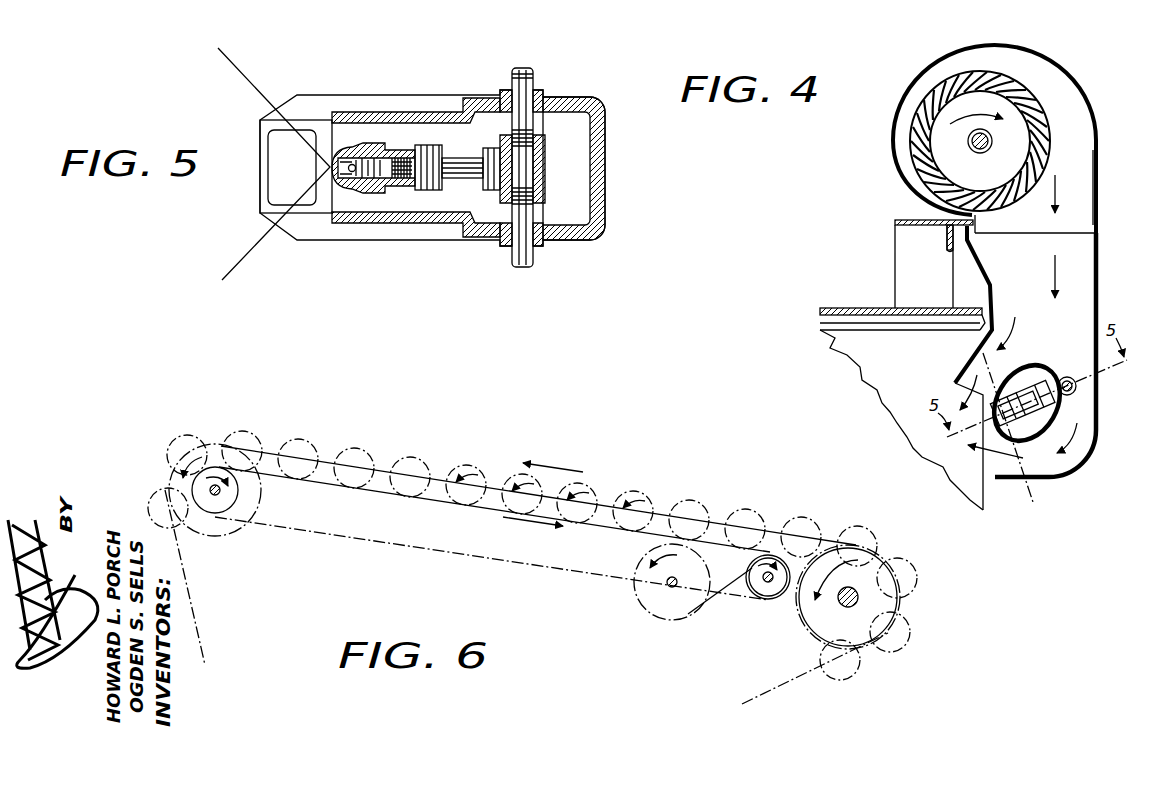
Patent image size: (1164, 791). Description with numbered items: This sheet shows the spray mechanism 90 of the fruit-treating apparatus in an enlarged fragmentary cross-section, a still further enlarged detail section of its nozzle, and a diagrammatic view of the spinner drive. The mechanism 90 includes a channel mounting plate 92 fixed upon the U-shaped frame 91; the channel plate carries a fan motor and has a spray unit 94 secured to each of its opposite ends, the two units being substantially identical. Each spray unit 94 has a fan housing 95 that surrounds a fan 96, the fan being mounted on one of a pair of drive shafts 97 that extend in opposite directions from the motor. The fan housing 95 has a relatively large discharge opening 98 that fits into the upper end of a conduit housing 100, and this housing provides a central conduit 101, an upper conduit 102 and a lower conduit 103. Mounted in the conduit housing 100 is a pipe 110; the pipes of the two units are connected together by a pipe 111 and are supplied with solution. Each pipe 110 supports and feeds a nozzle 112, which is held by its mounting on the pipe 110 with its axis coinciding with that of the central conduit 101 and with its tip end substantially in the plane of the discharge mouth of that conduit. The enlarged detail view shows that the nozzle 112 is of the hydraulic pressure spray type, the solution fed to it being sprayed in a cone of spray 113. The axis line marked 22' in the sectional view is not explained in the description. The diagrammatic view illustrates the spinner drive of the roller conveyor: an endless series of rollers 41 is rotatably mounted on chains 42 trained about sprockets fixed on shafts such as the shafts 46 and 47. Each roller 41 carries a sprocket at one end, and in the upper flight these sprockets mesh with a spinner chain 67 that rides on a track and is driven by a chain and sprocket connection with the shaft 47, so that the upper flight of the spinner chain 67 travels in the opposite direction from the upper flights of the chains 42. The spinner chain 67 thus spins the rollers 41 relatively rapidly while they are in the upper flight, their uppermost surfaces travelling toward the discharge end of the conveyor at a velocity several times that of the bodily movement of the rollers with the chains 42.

In FIG. 4, the mechanism 90 is at (916, 78).
In FIG. 4, the U-shaped frame 91 is at (908, 258).
In FIG. 4, the channel mounting plate 92 is at (910, 204).
In FIG. 4, the spray unit 94 is at (1098, 157).
In FIG. 4, the fan housing 95 is at (1078, 193).
In FIG. 4, the fan 96 is at (1040, 127).
In FIG. 4, the drive shaft 97 is at (980, 150).
In FIG. 4, the discharge opening 98 is at (1080, 221).
In FIG. 5, the conduit housing 100 is at (587, 156).
In FIG. 4, the conduit housing 100 is at (1099, 288).
In FIG. 5, the central conduit 101 is at (397, 132).
In FIG. 4, the central conduit 101 is at (1052, 385).
In FIG. 4, the upper conduit 102 is at (977, 361).
In FIG. 4, the lower conduit 103 is at (1058, 460).
In FIG. 5, the pipe 110 is at (513, 253).
In FIG. 4, the pipe 110 is at (1067, 377).
In FIG. 5, the pipe 111 is at (535, 77).
In FIG. 5, the nozzle 112 is at (393, 192).
In FIG. 4, the nozzle 112 is at (1008, 410).
In FIG. 5, the cone of spray 113 is at (251, 79).
In FIG. 4, the nozzle axis 22' is at (1016, 437).
In FIG. 6, the rollers 41 is at (408, 464).
In FIG. 6, the chains 42 is at (325, 457).
In FIG. 6, the shaft 46 is at (215, 498).
In FIG. 6, the shaft 47 is at (847, 608).
In FIG. 6, the spinner chain 67 is at (322, 483).